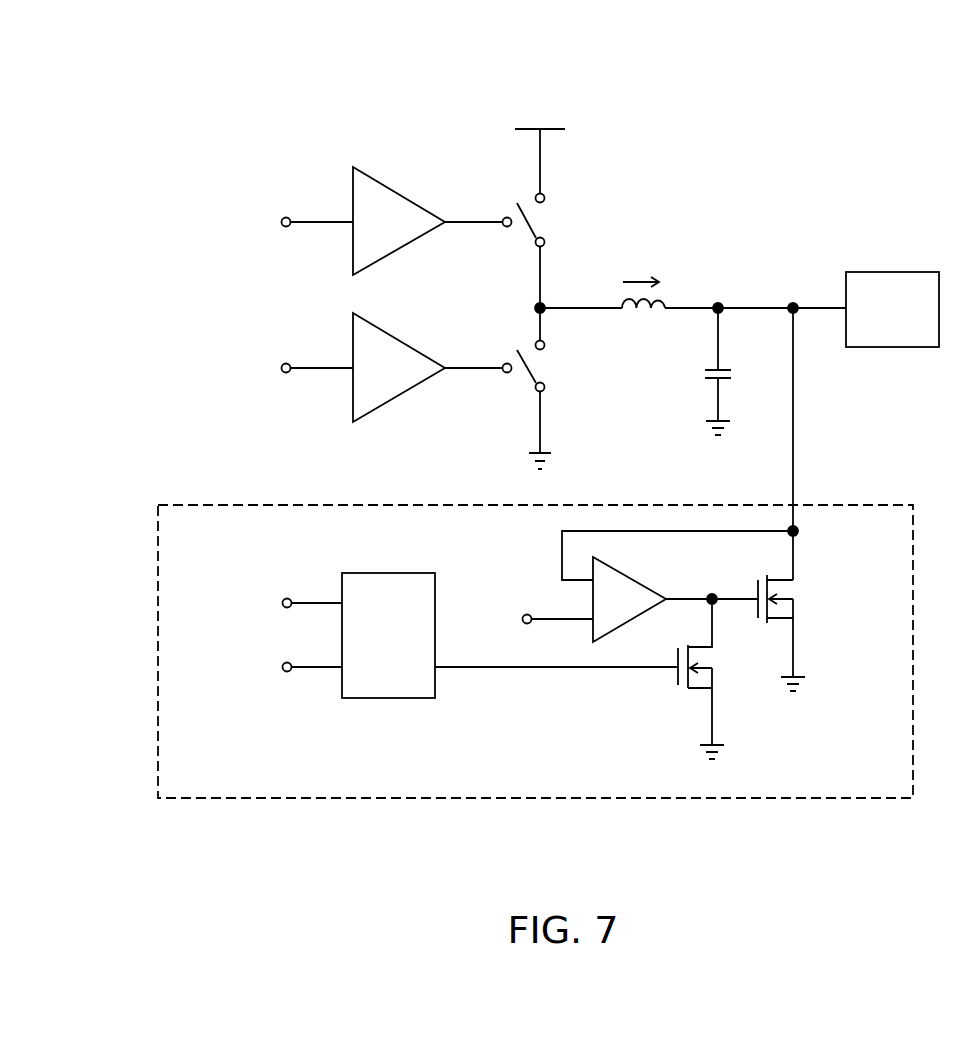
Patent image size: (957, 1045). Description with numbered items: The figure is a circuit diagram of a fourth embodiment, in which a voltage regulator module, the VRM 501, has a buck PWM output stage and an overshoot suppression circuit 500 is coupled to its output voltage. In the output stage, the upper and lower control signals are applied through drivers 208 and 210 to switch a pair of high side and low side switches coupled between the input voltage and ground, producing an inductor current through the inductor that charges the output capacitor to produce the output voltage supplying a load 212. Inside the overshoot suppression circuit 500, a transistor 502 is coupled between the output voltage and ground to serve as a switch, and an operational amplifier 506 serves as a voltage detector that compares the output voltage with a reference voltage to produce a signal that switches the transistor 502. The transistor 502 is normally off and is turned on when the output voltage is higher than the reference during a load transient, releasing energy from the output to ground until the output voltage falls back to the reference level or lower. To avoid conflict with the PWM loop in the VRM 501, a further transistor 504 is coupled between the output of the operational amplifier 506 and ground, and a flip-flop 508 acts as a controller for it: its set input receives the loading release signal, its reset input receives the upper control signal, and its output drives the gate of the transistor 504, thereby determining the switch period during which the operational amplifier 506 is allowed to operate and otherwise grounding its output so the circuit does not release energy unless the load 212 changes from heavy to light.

The VRM 501 is at (836, 107).
The driver 208 is at (400, 192).
The driver 210 is at (400, 338).
The load 212 is at (890, 272).
The overshoot suppression circuit 500 is at (158, 540).
The transistor 502 is at (808, 594).
The transistor 504 is at (729, 679).
The operational amplifier 506 is at (633, 572).
The flip-flop 508 is at (390, 698).